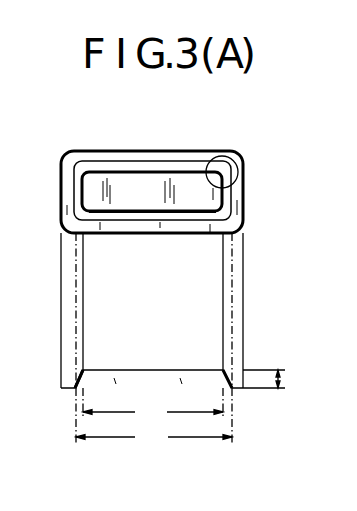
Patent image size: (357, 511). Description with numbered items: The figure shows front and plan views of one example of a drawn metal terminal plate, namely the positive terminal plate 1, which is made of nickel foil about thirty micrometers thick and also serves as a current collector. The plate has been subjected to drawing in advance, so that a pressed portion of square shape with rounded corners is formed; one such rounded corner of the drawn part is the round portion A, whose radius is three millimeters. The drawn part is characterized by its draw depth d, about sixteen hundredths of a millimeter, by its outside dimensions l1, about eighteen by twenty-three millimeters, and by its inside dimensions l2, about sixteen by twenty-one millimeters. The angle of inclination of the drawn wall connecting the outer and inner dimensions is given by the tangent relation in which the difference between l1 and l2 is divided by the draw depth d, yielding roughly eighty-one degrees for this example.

The positive terminal plate 1 is at (99, 157).
The round portion A is at (233, 157).
The draw depth d is at (271, 381).
The inside dimensions of the drawn part l2 is at (153, 413).
The outside dimensions of the drawn part l1 is at (154, 438).